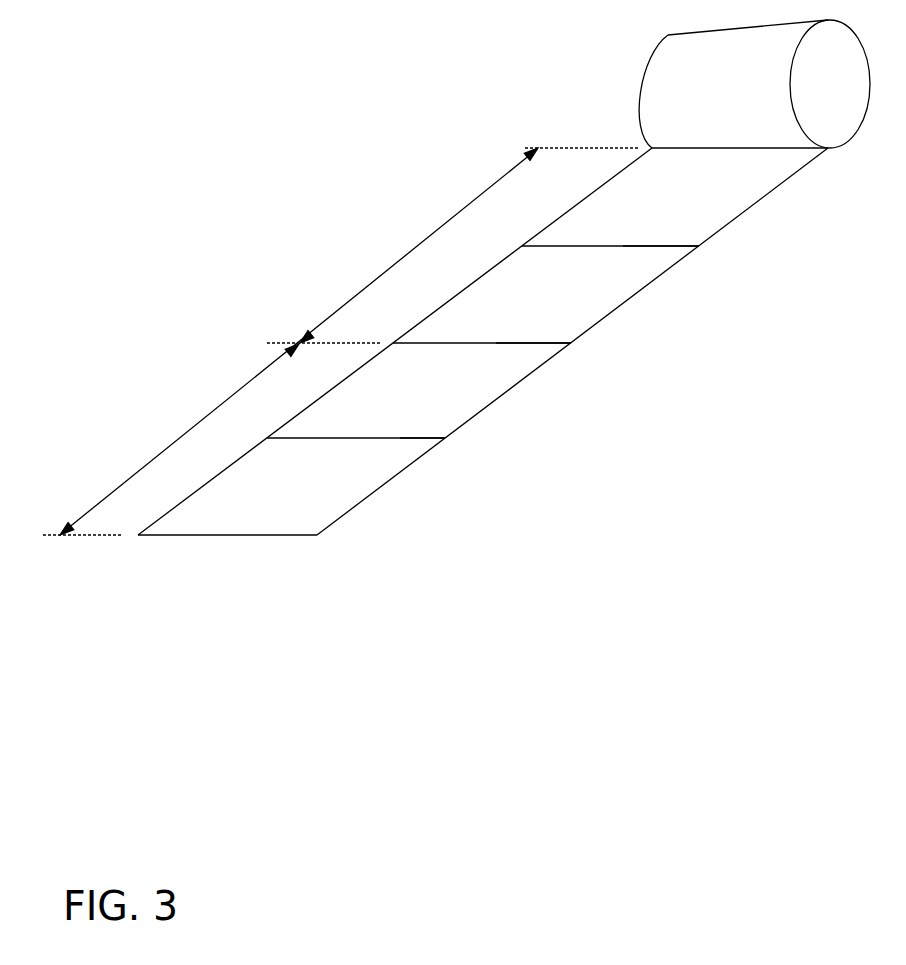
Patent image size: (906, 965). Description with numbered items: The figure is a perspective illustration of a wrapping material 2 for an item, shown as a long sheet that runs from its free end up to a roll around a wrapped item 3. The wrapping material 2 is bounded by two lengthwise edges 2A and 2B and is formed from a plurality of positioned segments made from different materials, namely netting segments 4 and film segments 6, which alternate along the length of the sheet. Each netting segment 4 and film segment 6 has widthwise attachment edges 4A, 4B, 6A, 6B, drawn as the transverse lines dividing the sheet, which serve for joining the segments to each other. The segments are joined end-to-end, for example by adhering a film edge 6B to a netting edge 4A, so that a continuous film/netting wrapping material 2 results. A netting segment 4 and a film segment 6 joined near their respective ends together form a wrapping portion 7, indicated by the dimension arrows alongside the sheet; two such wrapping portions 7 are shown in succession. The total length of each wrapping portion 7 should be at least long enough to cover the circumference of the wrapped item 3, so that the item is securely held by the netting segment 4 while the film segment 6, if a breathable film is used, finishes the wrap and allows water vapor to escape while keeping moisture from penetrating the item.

The wrapping material 2 is at (622, 83).
The wrapped item 3 is at (754, 84).
The netting segment 4 is at (483, 313).
The film segment 6 is at (424, 380).
The wrapping portion 7 is at (397, 247).
The lengthwise edge 2A is at (384, 487).
The lengthwise edge 2B is at (205, 490).
The widthwise attachment edge of netting 4A is at (499, 346).
The widthwise attachment edge of netting 4B is at (403, 438).
The widthwise attachment edge of film 6A is at (626, 247).
The widthwise attachment edge of film 6B is at (533, 341).